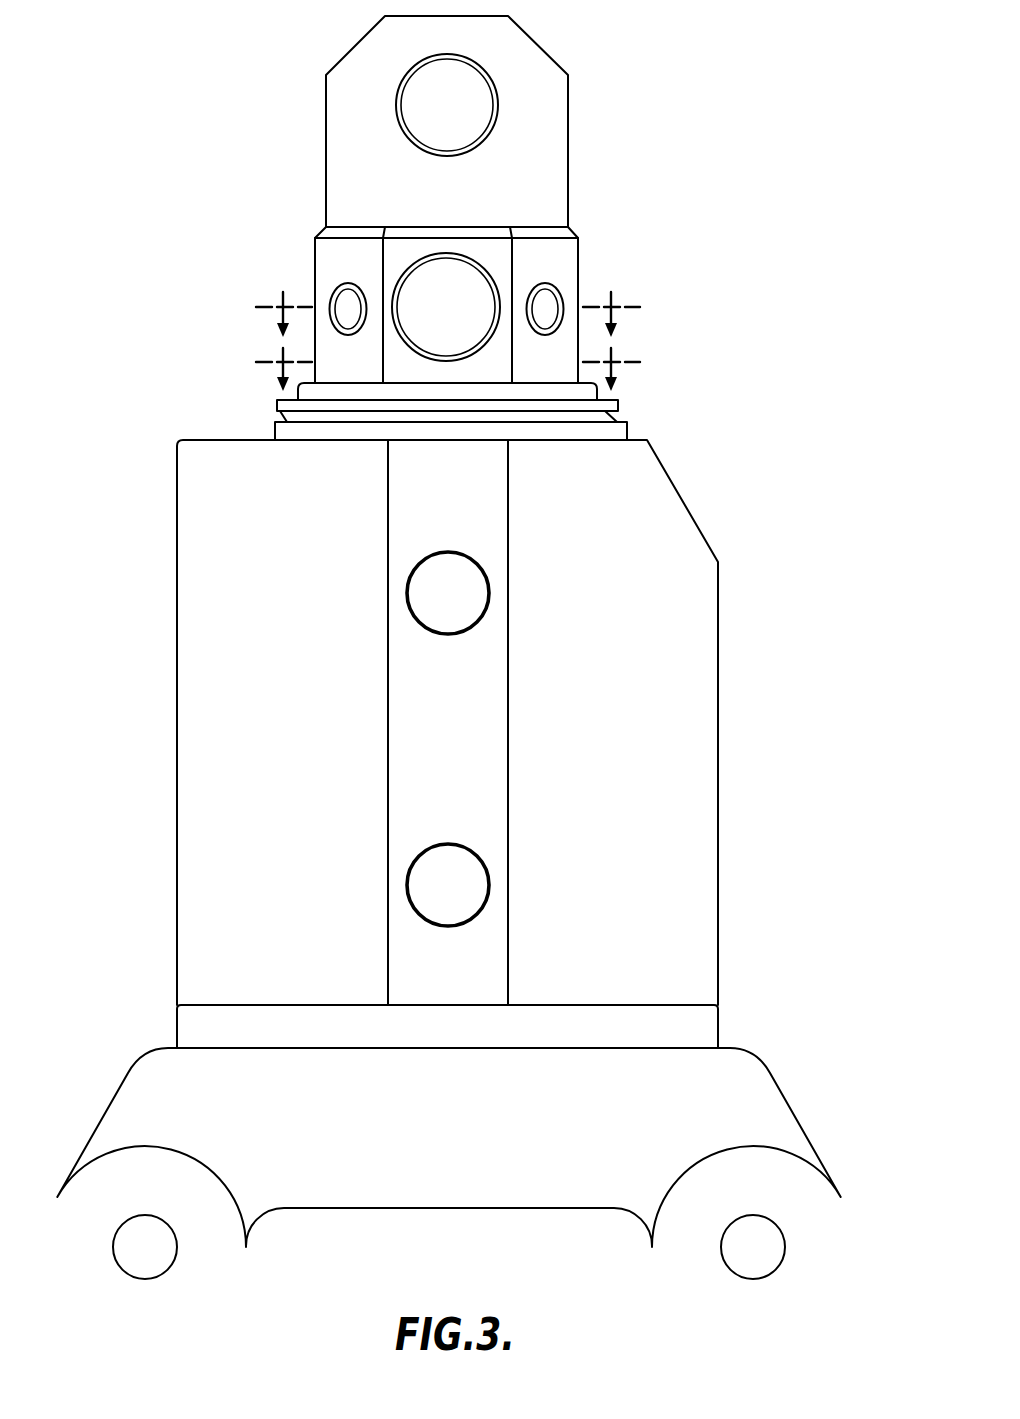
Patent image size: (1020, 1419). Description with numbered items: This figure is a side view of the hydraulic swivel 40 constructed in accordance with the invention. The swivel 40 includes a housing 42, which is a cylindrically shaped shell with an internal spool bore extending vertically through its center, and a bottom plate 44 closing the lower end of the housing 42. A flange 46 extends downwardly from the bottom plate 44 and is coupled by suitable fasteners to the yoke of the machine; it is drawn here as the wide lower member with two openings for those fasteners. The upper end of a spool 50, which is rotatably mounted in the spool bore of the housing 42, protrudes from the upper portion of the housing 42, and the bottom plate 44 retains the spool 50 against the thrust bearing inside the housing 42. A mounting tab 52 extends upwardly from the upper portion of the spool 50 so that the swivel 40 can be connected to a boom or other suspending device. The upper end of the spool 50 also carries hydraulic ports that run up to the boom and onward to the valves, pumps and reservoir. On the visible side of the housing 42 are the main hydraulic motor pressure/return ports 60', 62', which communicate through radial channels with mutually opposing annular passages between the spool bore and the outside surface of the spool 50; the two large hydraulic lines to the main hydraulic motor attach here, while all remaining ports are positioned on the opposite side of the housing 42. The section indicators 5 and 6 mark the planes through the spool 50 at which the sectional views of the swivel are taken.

The swivel 40 is at (696, 404).
The housing 42 is at (230, 505).
The bottom plate 44 is at (190, 1028).
The flange 46 is at (750, 1112).
The spool 50 is at (275, 432).
The mounting tab 52 is at (548, 110).
The main hydraulic motor pressure/return port 60' is at (492, 593).
The main hydraulic motor pressure/return port 62' is at (492, 885).
The section line 5- 5 is at (448, 308).
The section line 6- 6 is at (448, 363).